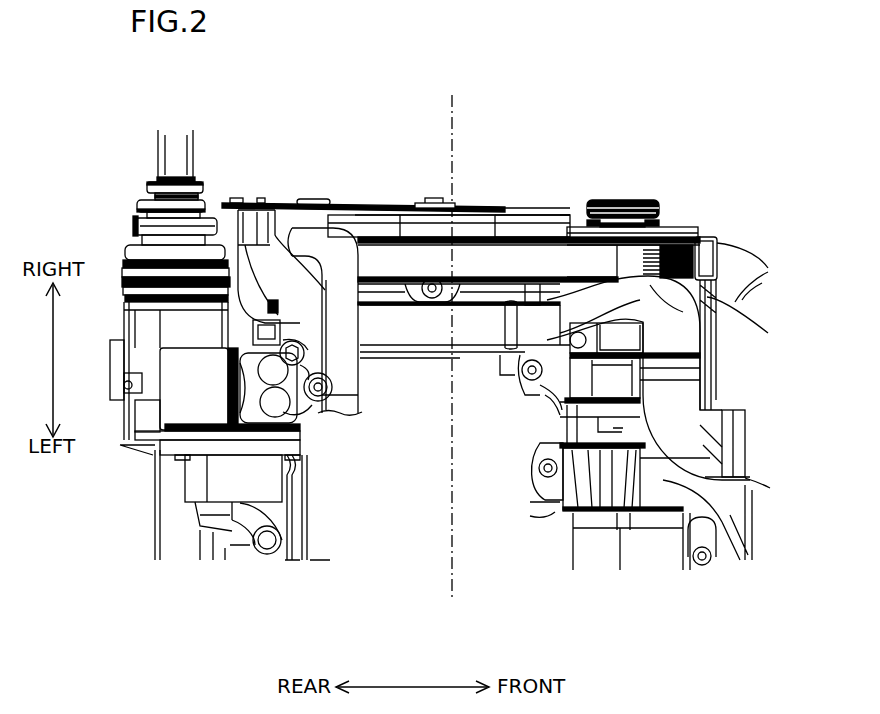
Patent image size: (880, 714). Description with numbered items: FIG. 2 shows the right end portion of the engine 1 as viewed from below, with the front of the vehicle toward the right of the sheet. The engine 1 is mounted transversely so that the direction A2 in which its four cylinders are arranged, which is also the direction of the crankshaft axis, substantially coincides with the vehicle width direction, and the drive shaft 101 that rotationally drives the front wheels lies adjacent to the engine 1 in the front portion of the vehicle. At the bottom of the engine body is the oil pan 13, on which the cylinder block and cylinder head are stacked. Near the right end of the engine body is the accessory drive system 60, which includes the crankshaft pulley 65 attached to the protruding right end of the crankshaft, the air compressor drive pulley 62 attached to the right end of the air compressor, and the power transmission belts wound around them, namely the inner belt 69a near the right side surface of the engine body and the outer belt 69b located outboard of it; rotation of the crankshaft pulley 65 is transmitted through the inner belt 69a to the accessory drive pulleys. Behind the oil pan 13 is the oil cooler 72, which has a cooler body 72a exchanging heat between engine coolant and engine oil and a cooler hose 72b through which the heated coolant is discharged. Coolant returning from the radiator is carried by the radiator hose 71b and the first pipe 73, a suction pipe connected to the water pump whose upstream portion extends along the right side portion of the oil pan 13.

The engine 1 is at (500, 580).
The oil pan 13 is at (357, 543).
The accessory drive system 60 is at (480, 165).
The air compressor drive pulley 62 is at (683, 217).
The crankshaft pulley 65 is at (432, 201).
The inner belt 69a is at (508, 258).
The outer belt 69b is at (546, 216).
The radiator hose 71b is at (728, 399).
The oil cooler 72 is at (188, 343).
The cooler body 72a is at (180, 365).
The cooler hose 72b is at (352, 387).
The first pipe 73 is at (472, 330).
The drive shaft 101 is at (196, 150).
The direction in which the cylinders are arranged A2 is at (450, 122).